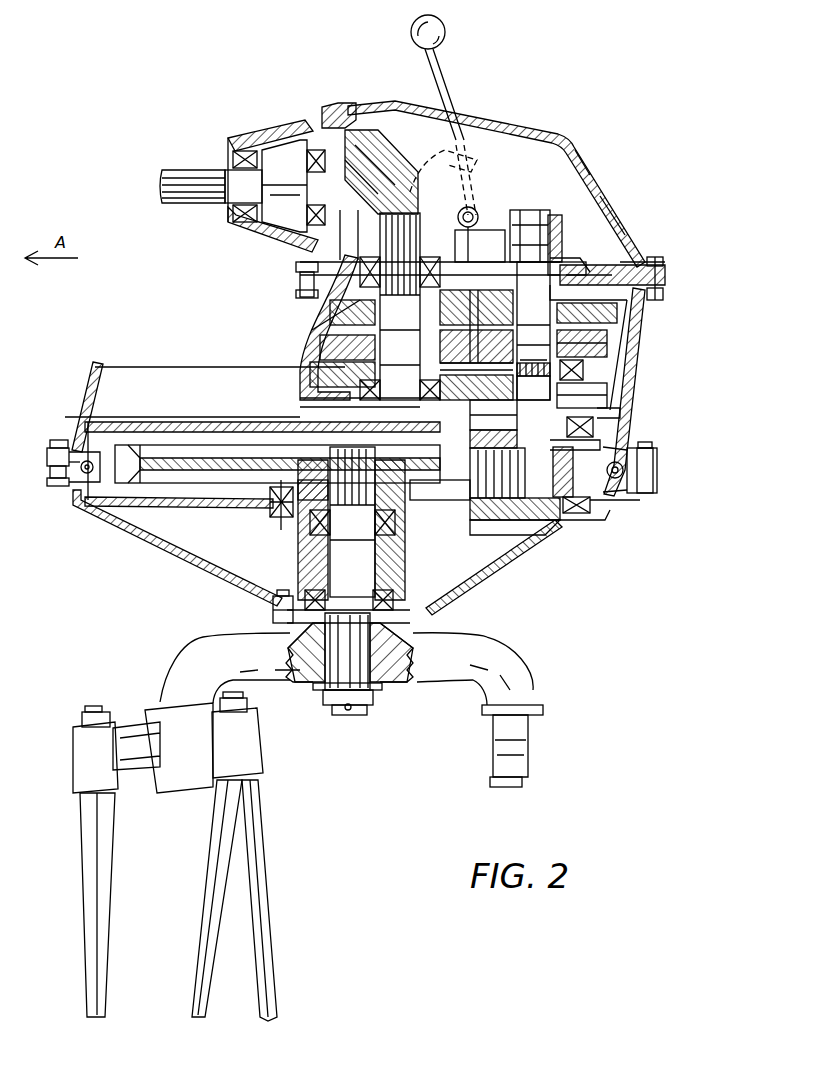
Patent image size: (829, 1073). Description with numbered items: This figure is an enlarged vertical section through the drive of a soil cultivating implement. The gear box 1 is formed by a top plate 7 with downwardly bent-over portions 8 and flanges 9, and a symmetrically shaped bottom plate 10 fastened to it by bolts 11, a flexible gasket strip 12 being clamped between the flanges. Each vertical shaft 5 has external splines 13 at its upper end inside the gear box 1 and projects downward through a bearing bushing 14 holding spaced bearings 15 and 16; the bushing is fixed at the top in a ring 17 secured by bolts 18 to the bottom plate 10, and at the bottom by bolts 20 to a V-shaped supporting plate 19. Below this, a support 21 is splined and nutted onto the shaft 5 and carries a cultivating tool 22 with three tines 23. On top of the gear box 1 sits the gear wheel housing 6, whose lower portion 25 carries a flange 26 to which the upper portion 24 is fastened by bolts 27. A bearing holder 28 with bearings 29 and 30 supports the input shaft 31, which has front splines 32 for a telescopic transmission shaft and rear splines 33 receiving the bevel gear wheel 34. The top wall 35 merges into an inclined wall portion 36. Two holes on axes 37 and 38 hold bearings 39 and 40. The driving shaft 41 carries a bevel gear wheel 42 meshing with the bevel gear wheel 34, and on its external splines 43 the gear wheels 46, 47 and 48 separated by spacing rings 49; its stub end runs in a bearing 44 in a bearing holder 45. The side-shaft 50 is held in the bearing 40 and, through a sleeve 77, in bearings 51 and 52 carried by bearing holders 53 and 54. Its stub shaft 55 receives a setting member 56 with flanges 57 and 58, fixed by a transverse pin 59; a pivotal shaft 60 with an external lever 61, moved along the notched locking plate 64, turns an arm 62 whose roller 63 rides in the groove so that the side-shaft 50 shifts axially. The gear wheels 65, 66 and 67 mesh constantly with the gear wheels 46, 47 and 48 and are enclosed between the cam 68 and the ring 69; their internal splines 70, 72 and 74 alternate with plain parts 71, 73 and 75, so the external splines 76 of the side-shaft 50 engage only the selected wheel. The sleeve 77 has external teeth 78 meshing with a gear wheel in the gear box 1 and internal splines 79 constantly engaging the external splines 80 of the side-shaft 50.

The gear box 1 is at (152, 411).
The shaft 5 is at (298, 540).
The gear wheel housing 6 is at (682, 275).
The top plate 7 is at (178, 425).
The bent-over portions 8 is at (95, 450).
The flanges 9 is at (47, 455).
The bottom plate 10 is at (215, 508).
The bolts 11 is at (62, 440).
The gasket strip 12 is at (47, 468).
The external splines 13 is at (352, 522).
The bearing bushing 14 is at (298, 560).
The bearing 15 is at (395, 522).
The bearing 16 is at (400, 565).
The rings 17 is at (268, 512).
The bolts 18 is at (281, 520).
The supporting plate 19 is at (110, 520).
The bolts 20 is at (285, 590).
The support 21 is at (215, 640).
The cultivating tool 22 is at (70, 845).
The tines 23 is at (265, 932).
The upper portion 24 is at (607, 190).
The lower portion 25 is at (296, 280).
The flange 26 is at (665, 292).
The bolts 27 is at (663, 256).
The bearing holder 28 is at (275, 135).
The bearing 29 is at (245, 222).
The bearing 30 is at (284, 186).
The input shaft 31 is at (235, 185).
The axial splines 32 is at (165, 185).
The axial splines 33 is at (370, 143).
The bevel gear wheel 34 is at (345, 105).
The wall 35 is at (480, 118).
The wall portion 36 is at (592, 165).
The axis 37 is at (368, 195).
The axis 38 is at (490, 205).
The bearing 39 is at (500, 262).
The bearing 40 is at (620, 262).
The driving shaft 41 is at (325, 300).
The bevel gear wheel 42 is at (443, 175).
The external splines 43 is at (400, 306).
The bearing 44 is at (300, 420).
The bearing holder 45 is at (370, 408).
The gear wheel 46 is at (312, 330).
The gear wheel 47 is at (320, 355).
The gear wheel 48 is at (320, 378).
The spacing rings 49 is at (330, 343).
The side-shaft 50 is at (555, 545).
The bearing 51 is at (500, 440).
The bearing 52 is at (580, 515).
The bearing holder 53 is at (500, 425).
The bearing holder 54 is at (455, 505).
The stub shaft 55 is at (535, 210).
The setting member 56 is at (560, 218).
The flange 57 is at (575, 260).
The flange 58 is at (592, 262).
The transverse pin 59 is at (538, 215).
The pivotal shaft 60 is at (472, 208).
The lever 61 is at (450, 80).
The arm 62 is at (480, 225).
The roller 63 is at (565, 240).
The locking plate 64 is at (438, 117).
The gear wheel 65 is at (620, 345).
The gear wheel 66 is at (620, 410).
The gear wheel 67 is at (593, 430).
The cam 68 is at (600, 445).
The ring 69 is at (617, 308).
The internal splines 70 is at (533, 331).
The plain portion 71 is at (607, 335).
The internal splines 72 is at (607, 388).
The plain part 73 is at (583, 366).
The internal splines 74 is at (533, 324).
The plain part 75 is at (533, 346).
The external splines 76 is at (533, 386).
The sleeve 77 is at (657, 460).
The external teeth 78 is at (615, 490).
The internal splines 79 is at (508, 473).
The external splines 80 is at (515, 512).